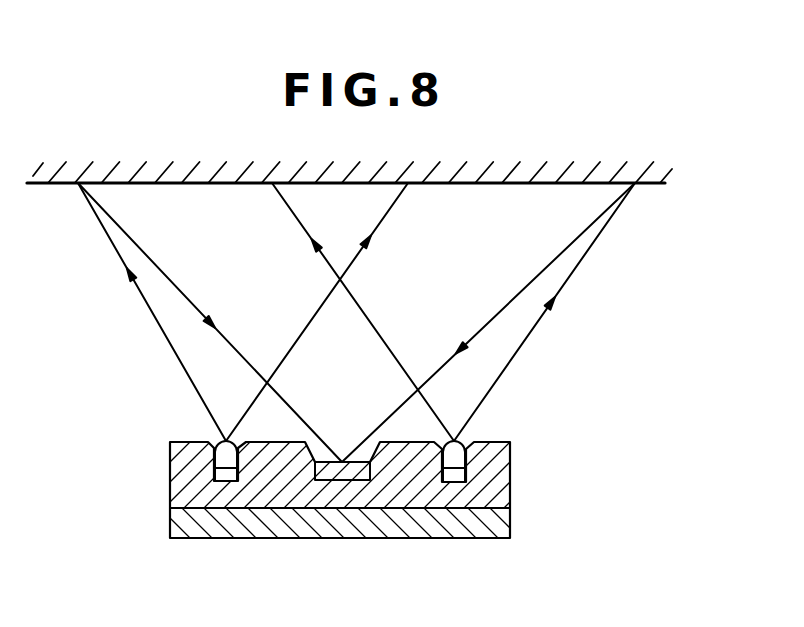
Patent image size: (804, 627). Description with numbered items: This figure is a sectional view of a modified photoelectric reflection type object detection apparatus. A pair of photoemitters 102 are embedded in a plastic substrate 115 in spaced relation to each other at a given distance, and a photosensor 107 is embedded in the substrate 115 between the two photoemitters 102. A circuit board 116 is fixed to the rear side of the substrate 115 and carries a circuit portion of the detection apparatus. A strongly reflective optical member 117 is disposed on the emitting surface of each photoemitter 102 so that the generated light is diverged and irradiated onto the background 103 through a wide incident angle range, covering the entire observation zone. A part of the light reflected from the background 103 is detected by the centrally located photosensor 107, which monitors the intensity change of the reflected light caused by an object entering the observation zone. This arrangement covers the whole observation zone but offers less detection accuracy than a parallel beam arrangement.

The background 103 is at (645, 184).
The photoemitter 102 is at (226, 482).
The photosensor 107 is at (350, 470).
The plastic substrate 115 is at (512, 467).
The circuit board 116 is at (512, 521).
The strongly reflective optical member 117 is at (218, 441).